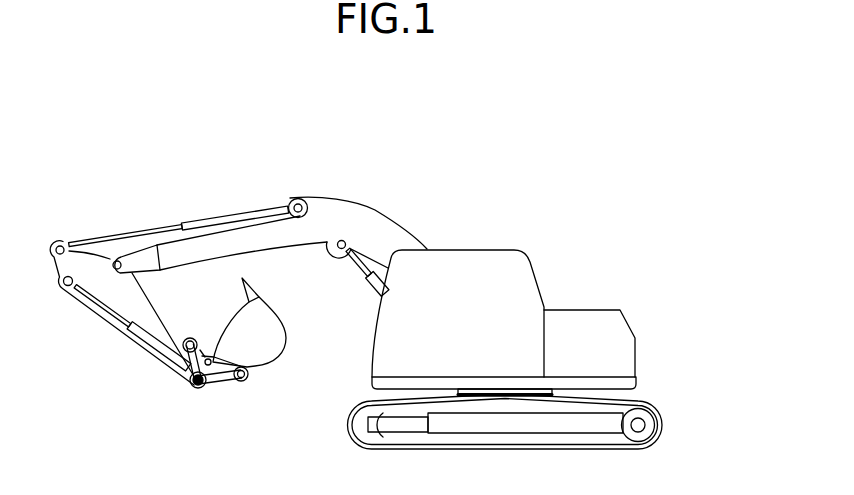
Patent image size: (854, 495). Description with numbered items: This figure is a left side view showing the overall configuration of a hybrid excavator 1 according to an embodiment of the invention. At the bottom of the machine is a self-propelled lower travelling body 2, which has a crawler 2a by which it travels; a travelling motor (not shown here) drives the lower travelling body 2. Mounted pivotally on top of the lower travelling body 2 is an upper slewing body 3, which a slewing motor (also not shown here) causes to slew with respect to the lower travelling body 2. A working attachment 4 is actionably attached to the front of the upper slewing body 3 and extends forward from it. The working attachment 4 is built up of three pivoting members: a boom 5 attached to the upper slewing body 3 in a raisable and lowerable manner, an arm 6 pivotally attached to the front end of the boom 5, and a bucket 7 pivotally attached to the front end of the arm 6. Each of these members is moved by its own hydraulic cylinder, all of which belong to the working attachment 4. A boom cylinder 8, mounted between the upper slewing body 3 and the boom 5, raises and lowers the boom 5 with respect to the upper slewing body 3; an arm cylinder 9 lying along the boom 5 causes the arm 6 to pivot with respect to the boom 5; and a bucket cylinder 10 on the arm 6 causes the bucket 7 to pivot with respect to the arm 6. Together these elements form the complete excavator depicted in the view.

The hybrid excavator 1 is at (647, 153).
The lower travelling body 2 is at (707, 422).
The crawler 2a is at (638, 404).
The upper slewing body 3 is at (675, 327).
The working attachment 4 is at (244, 158).
The boom 5 is at (394, 219).
The arm 6 is at (138, 291).
The bucket 7 is at (272, 338).
The boom cylinder 8 is at (361, 275).
The arm cylinder 9 is at (192, 223).
The bucket cylinder 10 is at (110, 317).